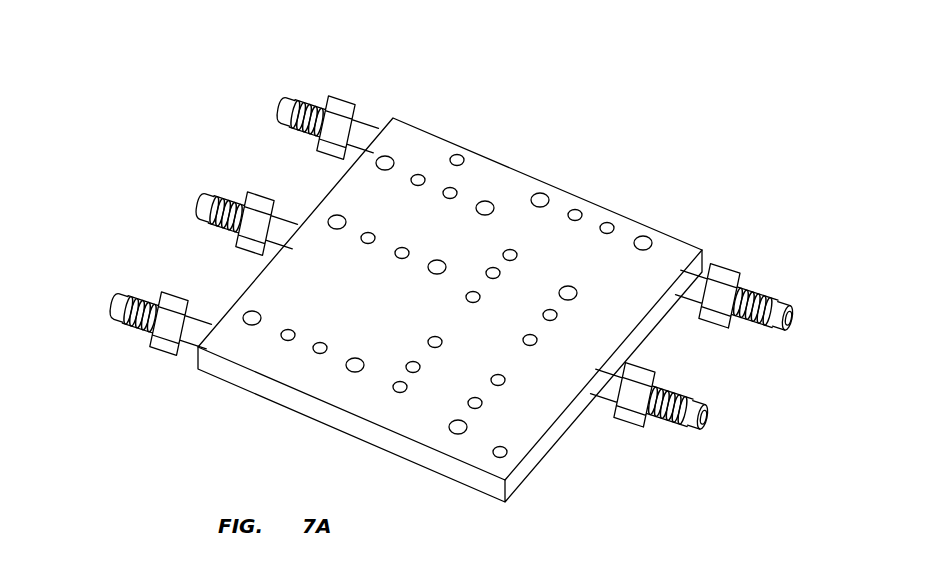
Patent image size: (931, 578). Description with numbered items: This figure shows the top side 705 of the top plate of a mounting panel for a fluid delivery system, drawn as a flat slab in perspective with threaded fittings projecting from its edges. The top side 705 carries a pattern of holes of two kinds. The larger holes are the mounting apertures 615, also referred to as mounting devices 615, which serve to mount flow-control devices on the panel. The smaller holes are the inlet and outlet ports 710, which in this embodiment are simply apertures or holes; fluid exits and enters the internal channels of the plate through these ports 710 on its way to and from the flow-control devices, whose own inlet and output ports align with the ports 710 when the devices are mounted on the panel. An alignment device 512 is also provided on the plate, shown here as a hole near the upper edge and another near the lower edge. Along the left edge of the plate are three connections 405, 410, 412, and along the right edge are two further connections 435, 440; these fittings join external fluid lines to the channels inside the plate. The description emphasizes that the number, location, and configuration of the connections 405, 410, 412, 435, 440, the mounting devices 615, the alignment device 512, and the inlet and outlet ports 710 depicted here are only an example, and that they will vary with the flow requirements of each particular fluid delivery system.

The connection 405 is at (322, 97).
The connection 410 is at (232, 192).
The connection 412 is at (153, 290).
The connection 435 is at (762, 288).
The connection 440 is at (665, 430).
The alignment device 512 is at (465, 153).
The mounting aperture 615 is at (388, 157).
The top side 705 is at (238, 357).
The inlet and outlet ports 710 is at (612, 222).